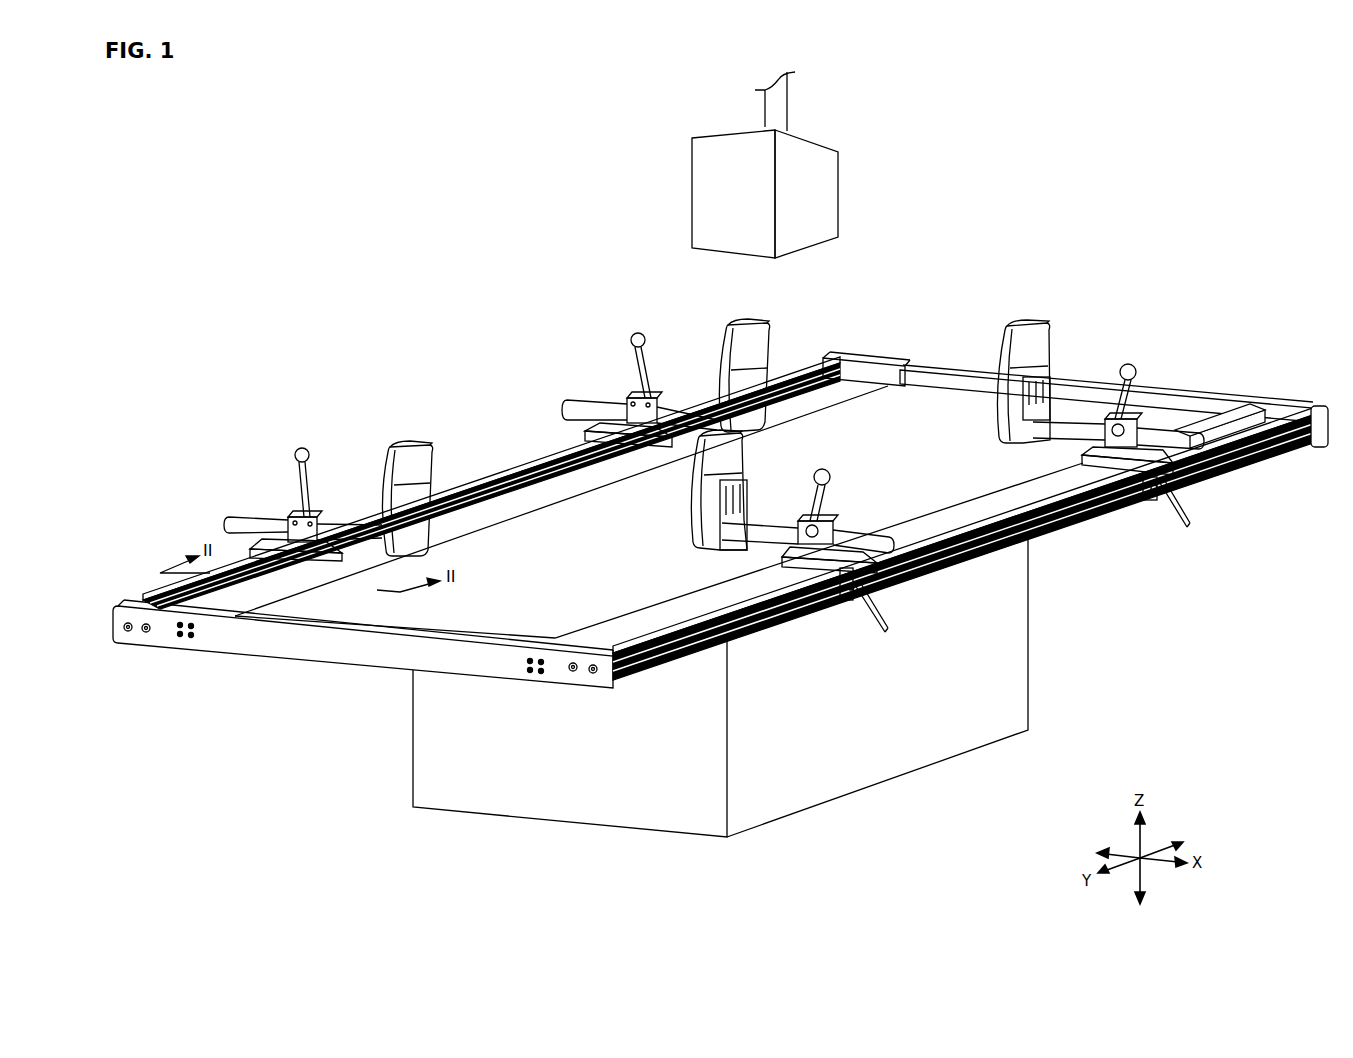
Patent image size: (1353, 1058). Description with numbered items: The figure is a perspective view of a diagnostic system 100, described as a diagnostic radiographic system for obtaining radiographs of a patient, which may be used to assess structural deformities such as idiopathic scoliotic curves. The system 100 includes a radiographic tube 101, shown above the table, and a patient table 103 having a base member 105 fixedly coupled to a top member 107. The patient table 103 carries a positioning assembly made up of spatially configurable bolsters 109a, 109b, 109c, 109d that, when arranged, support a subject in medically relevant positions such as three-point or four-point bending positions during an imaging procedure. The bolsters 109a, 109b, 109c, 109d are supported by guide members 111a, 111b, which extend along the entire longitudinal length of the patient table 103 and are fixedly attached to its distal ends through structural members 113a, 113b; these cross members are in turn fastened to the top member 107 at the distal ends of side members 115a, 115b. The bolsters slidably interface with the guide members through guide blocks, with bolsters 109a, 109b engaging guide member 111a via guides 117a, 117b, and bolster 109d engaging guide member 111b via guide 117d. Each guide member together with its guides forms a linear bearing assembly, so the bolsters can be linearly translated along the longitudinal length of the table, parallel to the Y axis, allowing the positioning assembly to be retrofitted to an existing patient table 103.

The diagnostic system 100 is at (391, 281).
The radiographic tube 101 is at (840, 196).
The patient table 103 is at (1178, 628).
The base member 105 is at (1023, 620).
The top member 107 is at (612, 555).
The bolster 109a is at (303, 529).
The bolster 109b is at (607, 390).
The bolster 109c is at (858, 520).
The bolster 109d is at (1165, 418).
The guide member 111a is at (490, 483).
The guide member 111b is at (648, 672).
The structural member 113a is at (957, 372).
The structural member 113b is at (263, 657).
The side member 115a is at (887, 372).
The side member 115b is at (1250, 408).
The guide block 117a is at (320, 557).
The guide block 117b is at (588, 443).
The guide block 117d is at (848, 600).